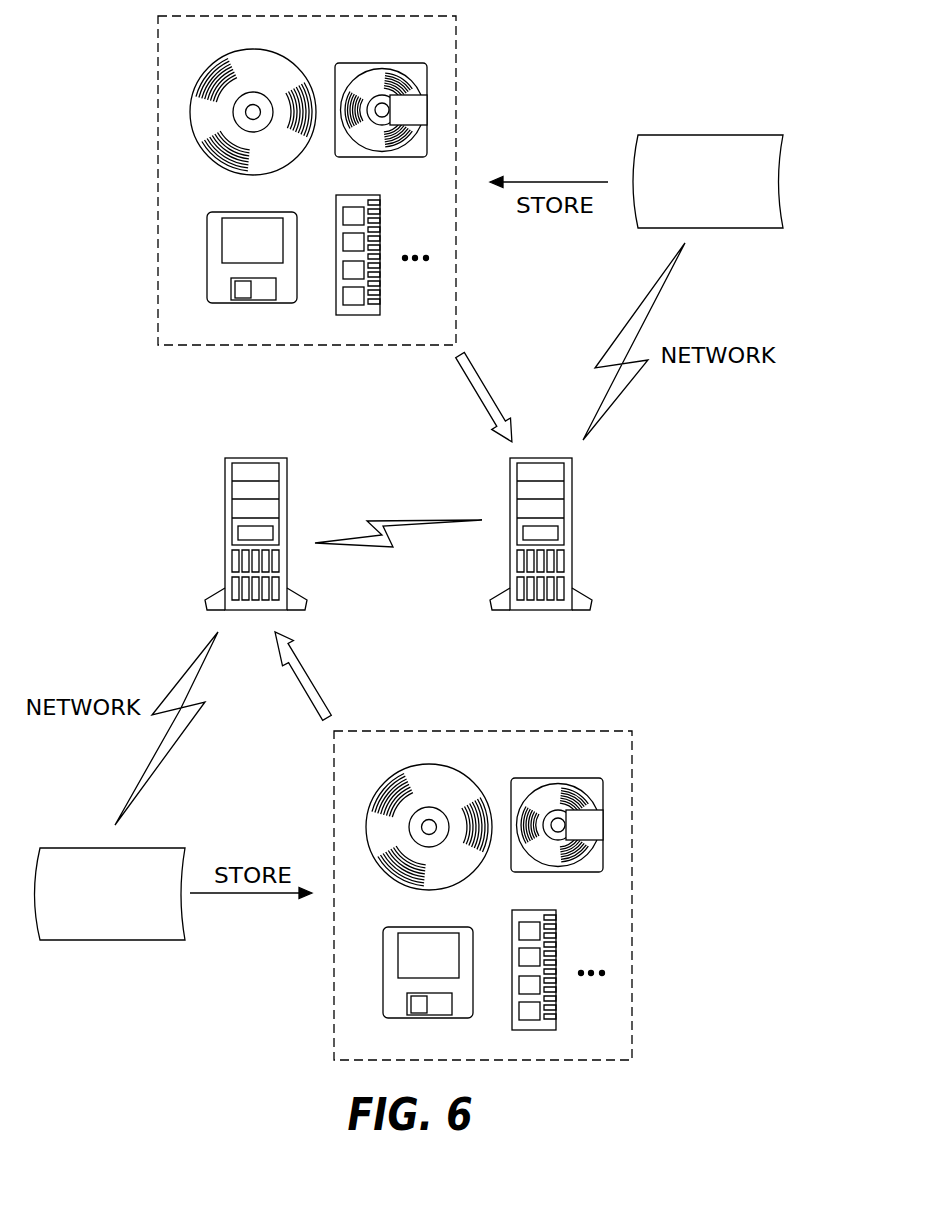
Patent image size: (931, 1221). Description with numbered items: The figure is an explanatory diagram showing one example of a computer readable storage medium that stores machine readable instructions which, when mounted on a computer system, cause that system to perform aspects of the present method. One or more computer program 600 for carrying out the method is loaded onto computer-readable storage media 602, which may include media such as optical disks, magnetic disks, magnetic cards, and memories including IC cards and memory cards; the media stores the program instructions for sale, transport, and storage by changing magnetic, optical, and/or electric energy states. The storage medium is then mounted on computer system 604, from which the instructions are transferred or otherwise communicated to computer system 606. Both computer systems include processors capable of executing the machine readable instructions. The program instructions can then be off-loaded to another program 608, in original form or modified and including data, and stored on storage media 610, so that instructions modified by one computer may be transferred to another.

The computer program 600 is at (140, 848).
The computer-readable storage media 602 is at (632, 793).
The computer system 604 is at (255, 457).
The computer system 606 is at (573, 532).
The program 608 is at (713, 135).
The storage media 610 is at (456, 87).